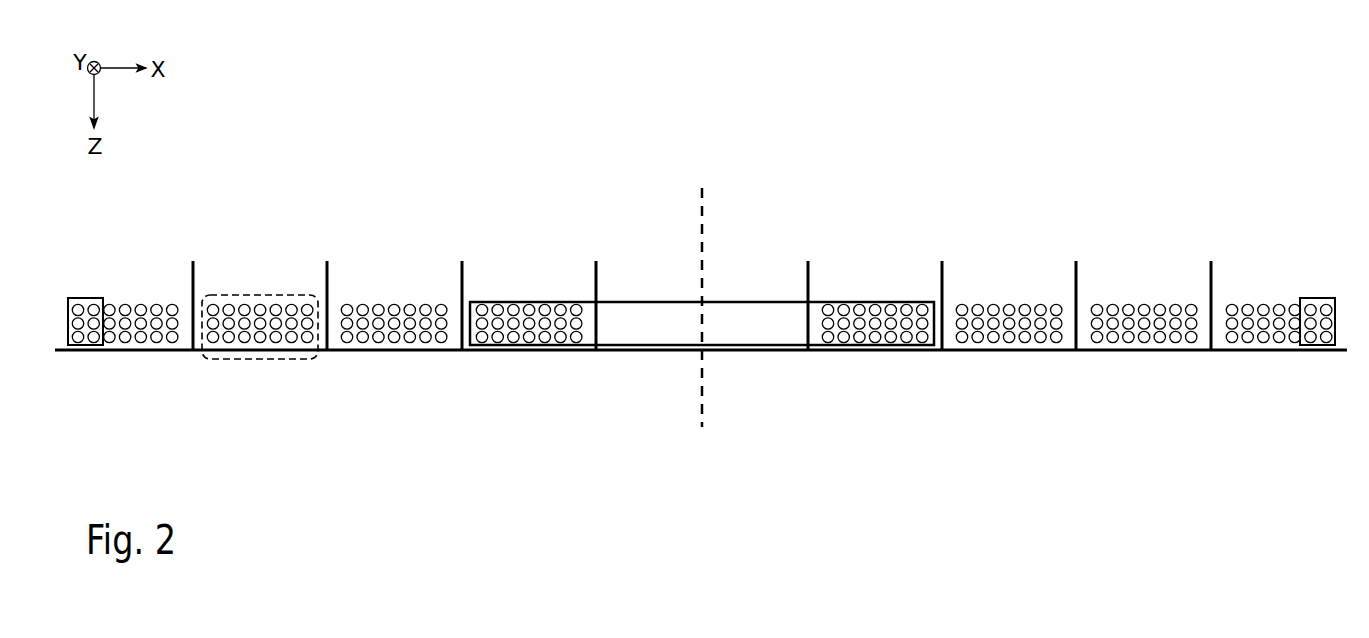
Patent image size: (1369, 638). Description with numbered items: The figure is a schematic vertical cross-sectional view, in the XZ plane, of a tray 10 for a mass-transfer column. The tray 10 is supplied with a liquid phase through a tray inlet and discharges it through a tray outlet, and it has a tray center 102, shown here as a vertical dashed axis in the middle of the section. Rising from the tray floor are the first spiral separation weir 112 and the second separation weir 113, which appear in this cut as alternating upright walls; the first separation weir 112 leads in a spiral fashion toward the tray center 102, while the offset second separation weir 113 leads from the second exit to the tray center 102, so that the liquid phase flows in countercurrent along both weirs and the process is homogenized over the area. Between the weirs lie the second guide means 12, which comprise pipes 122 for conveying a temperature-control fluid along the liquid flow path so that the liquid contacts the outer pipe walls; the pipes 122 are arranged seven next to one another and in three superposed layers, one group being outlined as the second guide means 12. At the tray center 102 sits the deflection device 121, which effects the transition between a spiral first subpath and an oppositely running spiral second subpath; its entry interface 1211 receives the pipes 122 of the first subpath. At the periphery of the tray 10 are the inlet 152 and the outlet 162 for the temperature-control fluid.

The tray 10 is at (1172, 123).
The second guide means 12 is at (256, 295).
The tray center 102 is at (703, 188).
The first spiral separation weir 112 is at (193, 265).
The second separation weir 113 is at (327, 265).
The deflection device 121 is at (660, 300).
The entry interface 1211 is at (537, 298).
The pipes 122 is at (867, 298).
The inlet for the temperature-control fluid 152 is at (1318, 298).
The outlet for the temperature-control fluid 162 is at (83, 298).